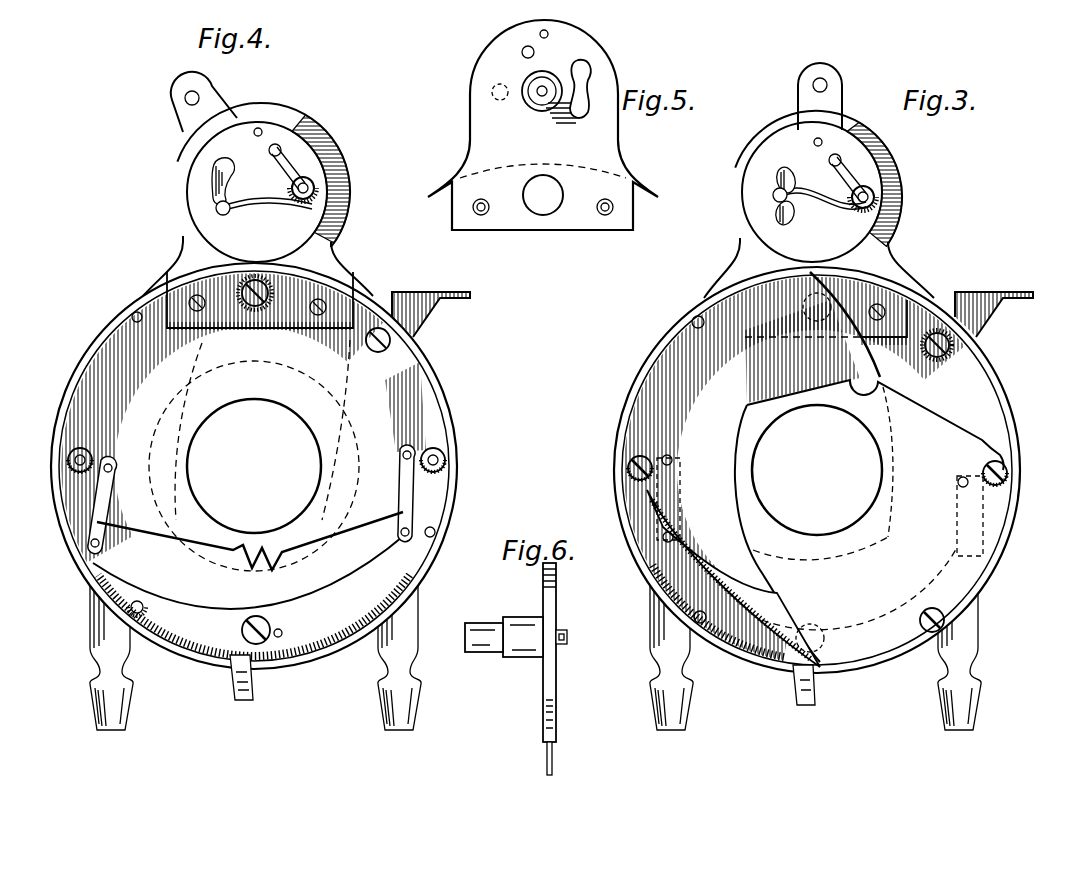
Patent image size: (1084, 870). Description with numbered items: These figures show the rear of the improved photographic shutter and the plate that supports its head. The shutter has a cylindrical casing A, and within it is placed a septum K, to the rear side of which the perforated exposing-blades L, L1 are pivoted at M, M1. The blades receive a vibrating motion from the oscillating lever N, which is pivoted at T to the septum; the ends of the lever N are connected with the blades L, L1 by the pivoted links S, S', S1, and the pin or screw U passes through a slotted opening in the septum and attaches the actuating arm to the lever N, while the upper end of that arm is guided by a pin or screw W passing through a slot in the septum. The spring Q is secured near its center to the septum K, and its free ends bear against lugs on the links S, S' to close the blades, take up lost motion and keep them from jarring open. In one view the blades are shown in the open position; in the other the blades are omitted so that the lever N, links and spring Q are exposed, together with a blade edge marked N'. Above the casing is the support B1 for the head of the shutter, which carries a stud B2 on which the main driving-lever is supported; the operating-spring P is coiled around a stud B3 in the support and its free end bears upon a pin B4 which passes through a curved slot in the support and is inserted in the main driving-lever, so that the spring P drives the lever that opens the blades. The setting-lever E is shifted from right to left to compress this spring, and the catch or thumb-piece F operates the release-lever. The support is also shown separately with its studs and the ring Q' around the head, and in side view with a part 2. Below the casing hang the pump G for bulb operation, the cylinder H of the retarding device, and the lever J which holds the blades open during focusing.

In FIG. 4, the cylindrical casing A is at (447, 396).
In FIG. 3, the cylindrical casing A is at (1006, 414).
In FIG. 4, the support for the head B1 is at (258, 248).
In FIG. 5, the support for the head B1 is at (543, 125).
In FIG. 6, the support for the head B1 is at (557, 592).
In FIG. 3, the support for the head B1 is at (819, 249).
In FIG. 5, the stud B2 is at (571, 78).
In FIG. 4, the stud B3 is at (315, 190).
In FIG. 5, the stud B3 is at (492, 92).
In FIG. 6, the stud B3 is at (568, 634).
In FIG. 3, the stud B3 is at (876, 199).
In FIG. 4, the pin B4 is at (216, 210).
In FIG. 3, the pin B4 is at (773, 198).
In FIG. 4, the setting-lever E is at (183, 112).
In FIG. 3, the setting-lever E is at (843, 92).
In FIG. 4, the catch or thumb-piece F is at (449, 291).
In FIG. 3, the catch or thumb-piece F is at (995, 300).
In FIG. 4, the pump G is at (420, 676).
In FIG. 3, the pump G is at (983, 688).
In FIG. 4, the cylinder of the retarding device H is at (90, 638).
In FIG. 3, the cylinder of the retarding device H is at (650, 643).
In FIG. 4, the lever J is at (252, 690).
In FIG. 3, the lever J is at (818, 690).
In FIG. 3, the septum K is at (869, 517).
In FIG. 3, the exposing-blade L is at (815, 404).
In FIG. 3, the exposing-blade L1 is at (854, 572).
In FIG. 4, the pivot M is at (70, 458).
In FIG. 3, the pivot M is at (628, 468).
In FIG. 4, the pivot M1 is at (446, 458).
In FIG. 3, the pivot M1 is at (1008, 470).
In FIG. 4, the oscillating lever N is at (148, 469).
In FIG. 3, the oscillating lever N is at (733, 578).
In FIG. 4, the shutter blade edge N' is at (305, 607).
In FIG. 4, the operating-spring P is at (270, 207).
In FIG. 3, the operating-spring P is at (827, 210).
In FIG. 4, the spring Q is at (250, 546).
In FIG. 4, the cover ring Q' is at (263, 173).
In FIG. 3, the cover ring Q' is at (827, 186).
In FIG. 4, the pivoted link S is at (109, 504).
In FIG. 3, the pivoted link S is at (637, 498).
In FIG. 4, the pivoted link S' is at (388, 493).
In FIG. 3, the pivoted link S1 is at (985, 525).
In FIG. 4, the pivot T is at (244, 641).
In FIG. 3, the pivot T is at (826, 640).
In FIG. 4, the pin or screw U is at (282, 640).
In FIG. 4, the pin or screw W is at (260, 316).
In FIG. 3, the pin or screw W is at (826, 326).
In FIG. 6, the knob 2 is at (504, 615).